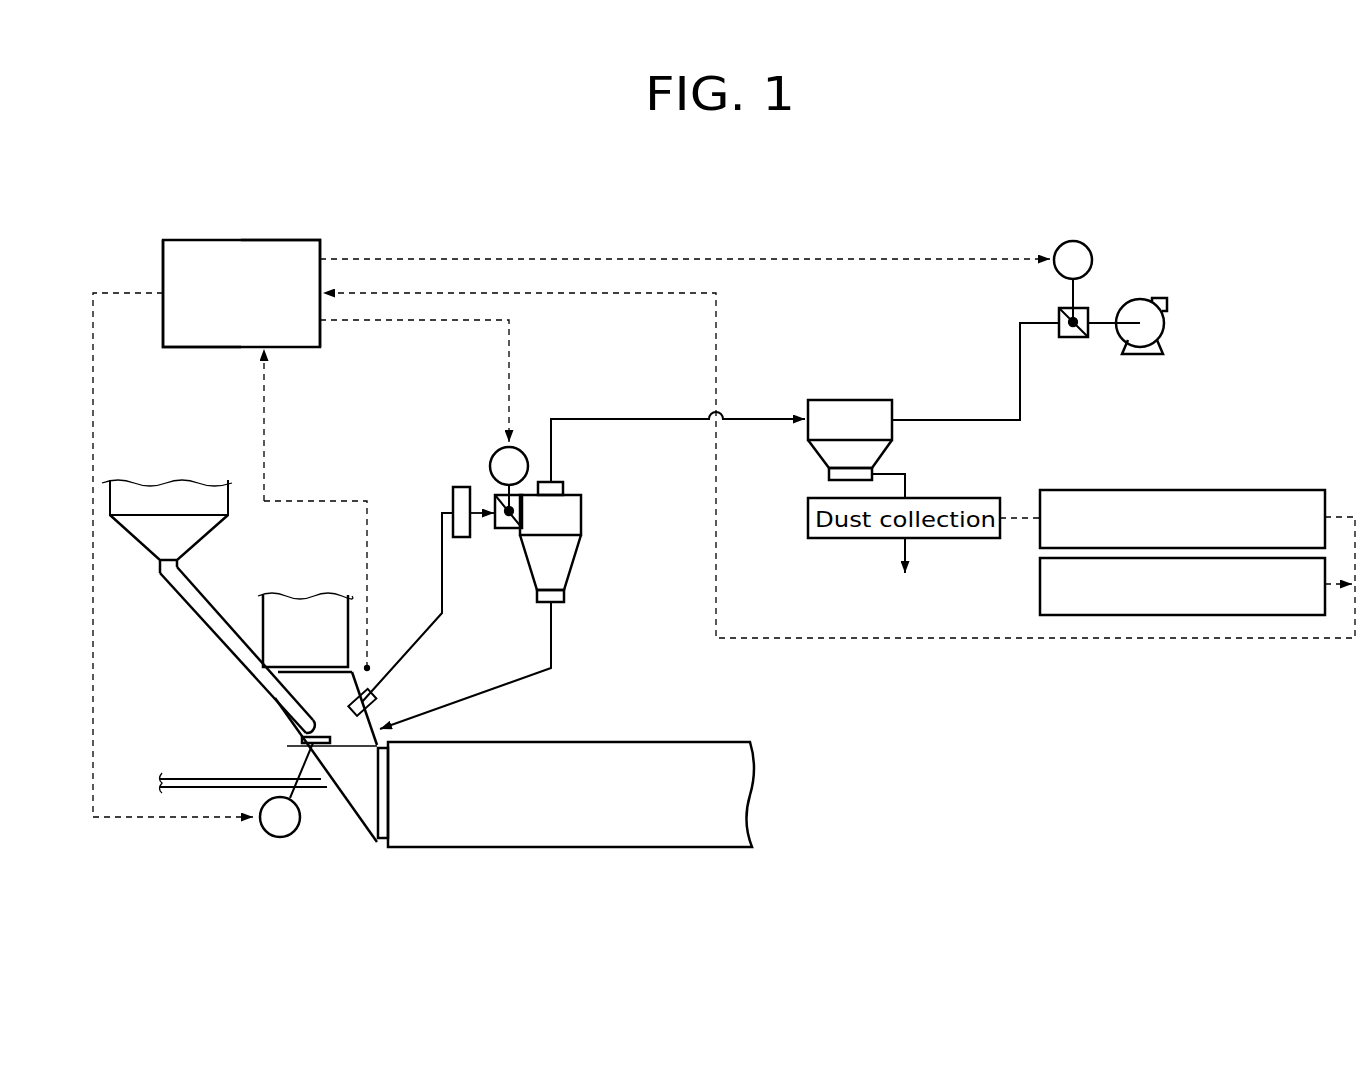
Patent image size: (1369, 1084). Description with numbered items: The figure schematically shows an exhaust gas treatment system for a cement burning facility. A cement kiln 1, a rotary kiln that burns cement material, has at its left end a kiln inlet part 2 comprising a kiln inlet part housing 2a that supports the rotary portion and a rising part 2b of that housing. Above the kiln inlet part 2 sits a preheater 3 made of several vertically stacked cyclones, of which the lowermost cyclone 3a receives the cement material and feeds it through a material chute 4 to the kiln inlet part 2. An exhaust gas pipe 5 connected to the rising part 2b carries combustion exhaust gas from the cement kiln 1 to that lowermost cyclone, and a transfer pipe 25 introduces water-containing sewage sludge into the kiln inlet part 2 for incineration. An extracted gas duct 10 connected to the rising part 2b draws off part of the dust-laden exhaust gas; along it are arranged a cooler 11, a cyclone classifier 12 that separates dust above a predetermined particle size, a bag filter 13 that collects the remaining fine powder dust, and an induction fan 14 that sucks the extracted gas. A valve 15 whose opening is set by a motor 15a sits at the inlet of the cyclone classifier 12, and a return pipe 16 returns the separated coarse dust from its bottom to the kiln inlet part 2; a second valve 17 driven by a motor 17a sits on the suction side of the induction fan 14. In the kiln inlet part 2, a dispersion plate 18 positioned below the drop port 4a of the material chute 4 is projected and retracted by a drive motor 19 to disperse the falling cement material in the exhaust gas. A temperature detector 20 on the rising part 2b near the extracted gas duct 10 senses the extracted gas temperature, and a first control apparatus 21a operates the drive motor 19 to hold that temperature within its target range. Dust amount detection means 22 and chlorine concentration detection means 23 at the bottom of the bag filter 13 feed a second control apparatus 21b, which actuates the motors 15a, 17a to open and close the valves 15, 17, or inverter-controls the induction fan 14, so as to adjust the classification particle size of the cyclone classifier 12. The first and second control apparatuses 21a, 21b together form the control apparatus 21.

The cement kiln 1 is at (586, 826).
The kiln inlet part 2 is at (333, 803).
The kiln inlet part housing 2a is at (363, 805).
The rising part 2b is at (353, 735).
The preheater 3 is at (137, 518).
The lowermost cyclone 3a is at (150, 534).
The material chute 4 is at (236, 650).
The drop port 4a is at (293, 723).
The exhaust gas pipe 5 is at (277, 608).
The extracted gas duct 10 is at (442, 582).
The cooler 11 is at (460, 503).
The cyclone classifier 12 is at (583, 512).
The bag filter 13 is at (851, 411).
The induction fan 14 is at (1167, 320).
The valve for flow rate adjustment 15 is at (507, 526).
The motor 15a is at (499, 451).
The return pipe 16 is at (515, 690).
The valve for flow rate adjustment 17 is at (1076, 337).
The motor 17a is at (1090, 253).
The dispersion plate 18 is at (300, 740).
The drive motor 19 is at (278, 821).
The temperature detector 20 is at (358, 699).
The control apparatus 21 is at (247, 258).
The first control apparatus 21a is at (188, 240).
The second control apparatus 21b is at (298, 240).
The dust amount detection means 22 is at (1170, 497).
The chlorine concentration detection means 23 is at (1163, 618).
The transfer pipe 25 is at (201, 779).